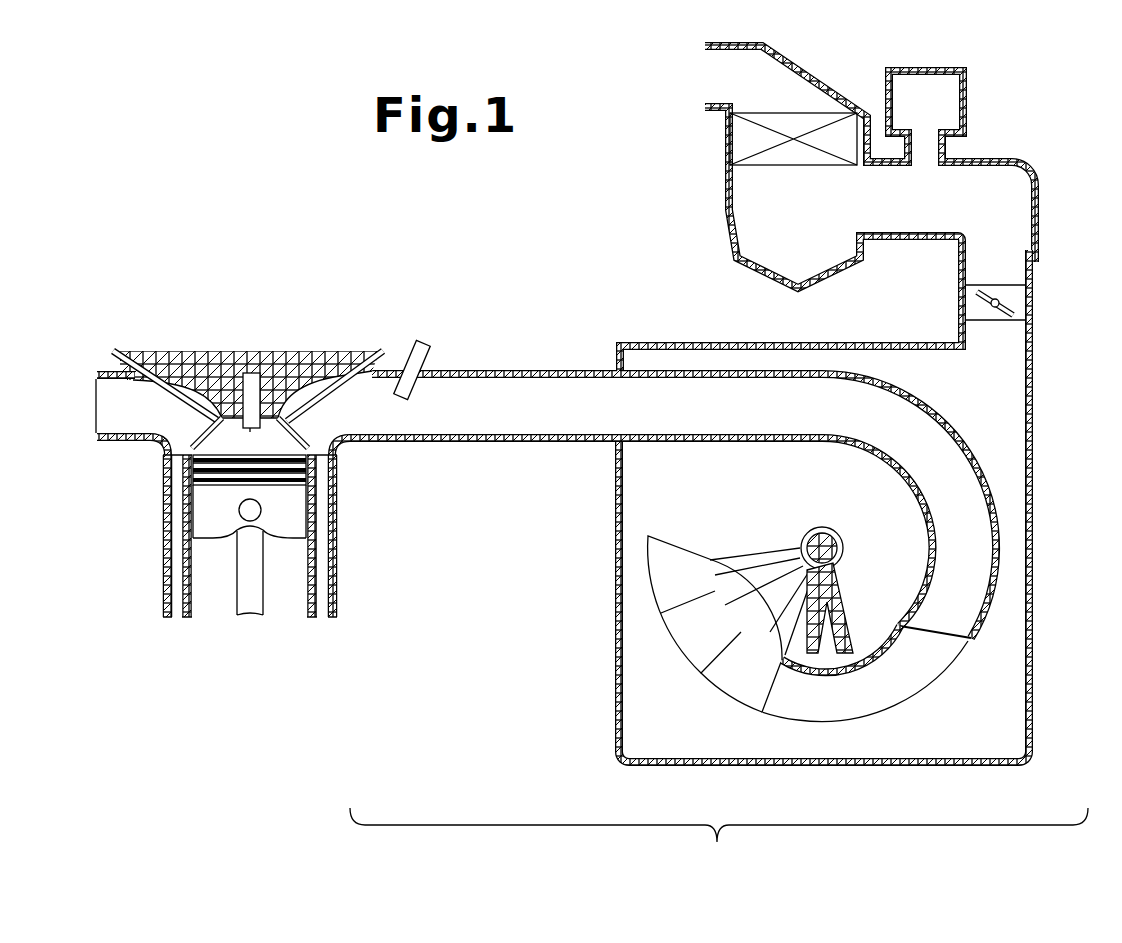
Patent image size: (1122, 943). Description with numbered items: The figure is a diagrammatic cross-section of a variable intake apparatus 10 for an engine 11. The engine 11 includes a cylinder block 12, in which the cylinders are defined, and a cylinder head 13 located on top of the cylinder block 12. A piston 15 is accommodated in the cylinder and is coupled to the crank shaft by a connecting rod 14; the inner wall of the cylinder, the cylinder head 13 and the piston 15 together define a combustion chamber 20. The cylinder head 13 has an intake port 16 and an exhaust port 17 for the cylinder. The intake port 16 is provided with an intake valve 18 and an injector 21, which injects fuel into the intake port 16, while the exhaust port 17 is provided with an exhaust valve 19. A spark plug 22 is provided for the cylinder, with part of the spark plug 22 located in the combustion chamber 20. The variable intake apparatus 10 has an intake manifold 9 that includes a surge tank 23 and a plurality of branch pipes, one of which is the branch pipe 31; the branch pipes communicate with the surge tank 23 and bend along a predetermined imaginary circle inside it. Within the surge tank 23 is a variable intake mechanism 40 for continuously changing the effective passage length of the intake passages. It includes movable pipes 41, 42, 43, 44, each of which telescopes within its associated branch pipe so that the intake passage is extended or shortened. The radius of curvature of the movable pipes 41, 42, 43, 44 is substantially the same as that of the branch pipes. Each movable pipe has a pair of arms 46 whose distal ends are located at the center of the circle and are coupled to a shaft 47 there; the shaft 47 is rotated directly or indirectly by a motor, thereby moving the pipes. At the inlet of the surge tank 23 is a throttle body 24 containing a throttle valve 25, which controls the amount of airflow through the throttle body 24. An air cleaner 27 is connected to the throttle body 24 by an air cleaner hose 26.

The intake manifold 9 is at (616, 562).
The variable intake apparatus 10 is at (735, 903).
The engine 11 is at (265, 491).
The cylinder block 12 is at (338, 537).
The cylinder head 13 is at (208, 365).
The connecting rod 14 is at (266, 617).
The piston 15 is at (222, 527).
The intake port 16 is at (357, 428).
The exhaust port 17 is at (160, 433).
The intake valve 18 is at (345, 410).
The exhaust valve 19 is at (150, 402).
The combustion chamber 20 is at (241, 451).
The injector 21 is at (424, 345).
The spark plug 22 is at (258, 380).
The surge tank 23 is at (1034, 392).
The throttle body 24 is at (1032, 330).
The throttle valve 25 is at (1000, 318).
The air cleaner hose 26 is at (995, 153).
The air cleaner 27 is at (793, 168).
The branch pipe 31 is at (500, 368).
The variable intake mechanism 40 is at (801, 628).
The movable pipe 41 is at (885, 710).
The movable pipe 42 is at (730, 704).
The movable pipe 43 is at (686, 655).
The movable pipe 44 is at (647, 588).
The arm 46 is at (750, 556).
The shaft 47 is at (841, 545).